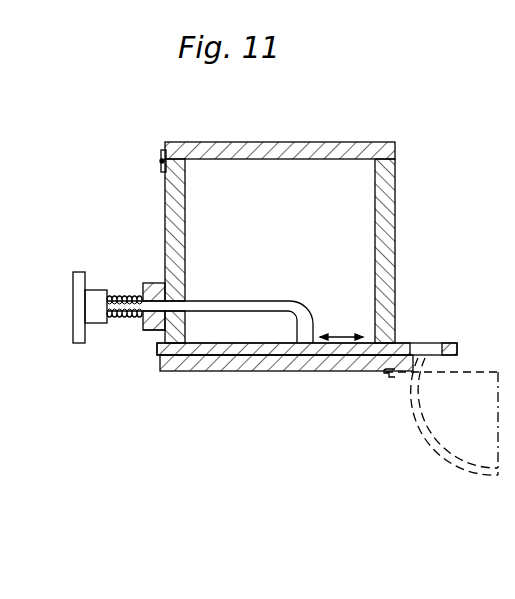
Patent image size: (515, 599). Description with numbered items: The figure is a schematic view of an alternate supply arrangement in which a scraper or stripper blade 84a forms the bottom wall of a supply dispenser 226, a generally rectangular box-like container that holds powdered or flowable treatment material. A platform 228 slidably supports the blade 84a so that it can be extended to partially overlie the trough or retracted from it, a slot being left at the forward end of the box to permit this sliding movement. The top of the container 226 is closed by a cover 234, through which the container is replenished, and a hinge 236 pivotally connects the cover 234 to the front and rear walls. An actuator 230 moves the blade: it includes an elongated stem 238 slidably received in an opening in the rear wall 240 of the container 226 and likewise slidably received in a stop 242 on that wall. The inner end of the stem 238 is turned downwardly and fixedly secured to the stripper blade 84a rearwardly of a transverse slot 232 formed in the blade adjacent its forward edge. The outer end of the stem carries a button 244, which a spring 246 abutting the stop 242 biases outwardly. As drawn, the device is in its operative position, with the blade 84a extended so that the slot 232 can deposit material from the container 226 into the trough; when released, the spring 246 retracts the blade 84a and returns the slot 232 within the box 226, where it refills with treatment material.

The supply dispenser 226 is at (399, 174).
The platform 228 is at (312, 373).
The actuator 230 is at (95, 289).
The transverse slot 232 is at (420, 357).
The cover 234 is at (251, 142).
The hinge 236 is at (159, 170).
The elongated stem 238 is at (243, 301).
The rear wall 240 is at (168, 238).
The stop 242 is at (143, 334).
The button 244 is at (75, 345).
The spring 246 is at (128, 289).
The stripper blade 84a is at (450, 356).